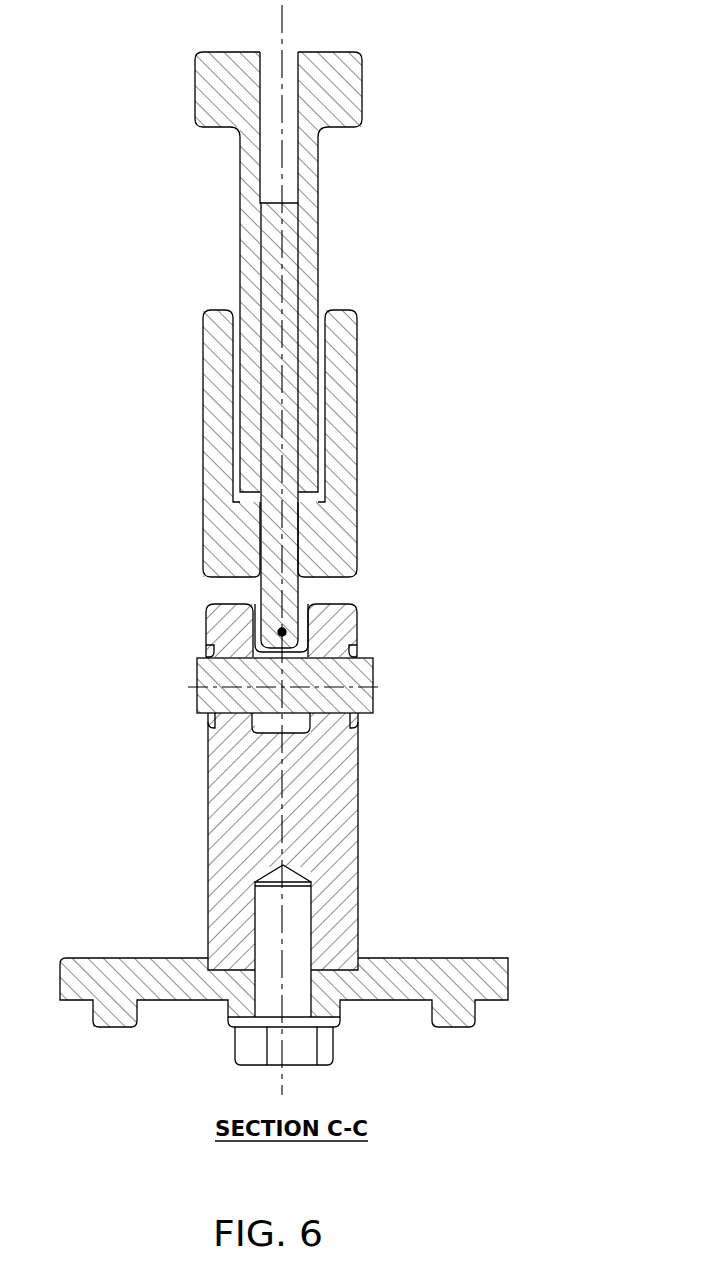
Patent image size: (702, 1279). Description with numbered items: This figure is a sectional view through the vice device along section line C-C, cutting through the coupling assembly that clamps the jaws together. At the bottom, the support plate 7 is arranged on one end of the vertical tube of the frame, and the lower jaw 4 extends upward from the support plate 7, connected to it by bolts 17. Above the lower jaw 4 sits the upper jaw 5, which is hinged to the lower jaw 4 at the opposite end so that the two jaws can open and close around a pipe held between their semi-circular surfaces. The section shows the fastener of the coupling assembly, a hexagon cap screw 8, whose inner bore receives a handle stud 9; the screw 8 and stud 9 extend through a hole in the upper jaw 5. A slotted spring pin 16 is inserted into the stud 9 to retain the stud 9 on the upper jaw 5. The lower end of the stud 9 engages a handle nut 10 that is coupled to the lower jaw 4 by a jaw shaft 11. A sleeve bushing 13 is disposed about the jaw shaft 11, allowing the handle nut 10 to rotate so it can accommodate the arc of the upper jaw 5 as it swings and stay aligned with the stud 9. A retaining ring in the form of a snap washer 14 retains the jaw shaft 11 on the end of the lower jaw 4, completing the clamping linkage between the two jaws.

The lower jaw 4 is at (208, 878).
The upper jaw 5 is at (357, 488).
The support plate 7 is at (473, 958).
The hexagon cap screw 8 is at (318, 235).
The handle stud 9 is at (300, 588).
The handle nut 10 is at (258, 622).
The jaw shaft 11 is at (197, 698).
The sleeve bushing 13 is at (205, 650).
The snap washer 14 is at (365, 718).
The slotted spring pin 16 is at (355, 625).
The bolts 17 is at (236, 1040).